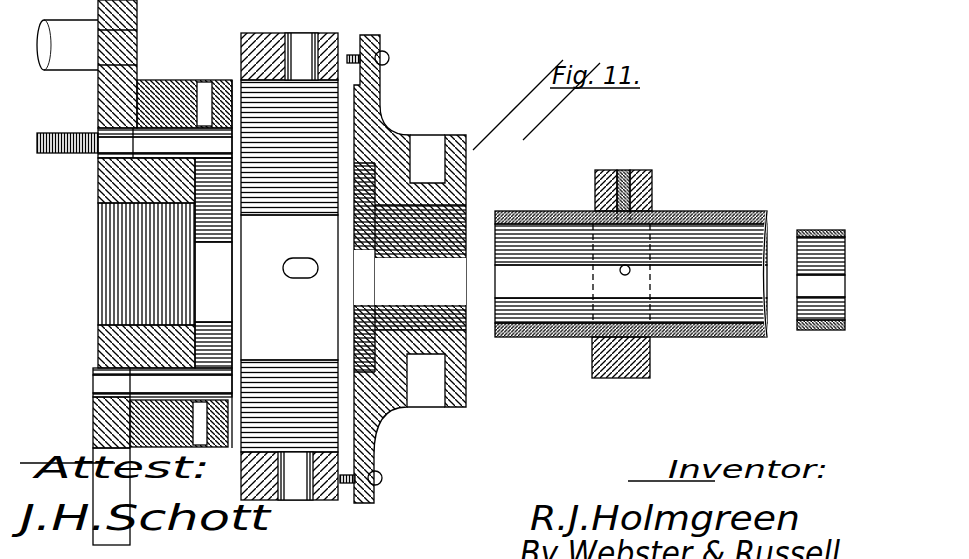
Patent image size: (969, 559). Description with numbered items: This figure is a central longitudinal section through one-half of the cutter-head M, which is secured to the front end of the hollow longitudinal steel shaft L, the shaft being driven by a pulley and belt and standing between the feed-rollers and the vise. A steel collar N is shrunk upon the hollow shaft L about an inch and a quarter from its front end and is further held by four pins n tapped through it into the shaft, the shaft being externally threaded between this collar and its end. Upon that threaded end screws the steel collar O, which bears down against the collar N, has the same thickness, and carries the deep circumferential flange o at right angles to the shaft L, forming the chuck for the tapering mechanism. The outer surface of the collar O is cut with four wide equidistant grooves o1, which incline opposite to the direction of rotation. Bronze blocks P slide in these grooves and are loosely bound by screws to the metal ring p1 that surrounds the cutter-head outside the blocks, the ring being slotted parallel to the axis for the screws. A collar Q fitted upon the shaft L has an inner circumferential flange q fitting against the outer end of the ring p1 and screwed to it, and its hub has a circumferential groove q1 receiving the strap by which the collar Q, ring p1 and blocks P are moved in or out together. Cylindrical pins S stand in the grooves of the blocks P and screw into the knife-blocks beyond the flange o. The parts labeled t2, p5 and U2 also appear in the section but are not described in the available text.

The shaft end t² t2 is at (76, 33).
The cylindrical pins S is at (62, 134).
The steel collar O is at (104, 173).
The circumferential flange o is at (102, 430).
The bronze blocks P is at (212, 76).
The metal ring p1 is at (326, 510).
The grooves o1 is at (207, 264).
The cutter-head M is at (289, 252).
The slot p5 is at (292, 510).
The inner circumferential flange q is at (389, 58).
The collar Q is at (410, 269).
The circumferential groove q1 is at (480, 153).
The steel collar N is at (622, 262).
The pins n is at (626, 173).
The hollow longitudinal steel shaft L is at (722, 212).
The tube section U² U2 is at (819, 229).